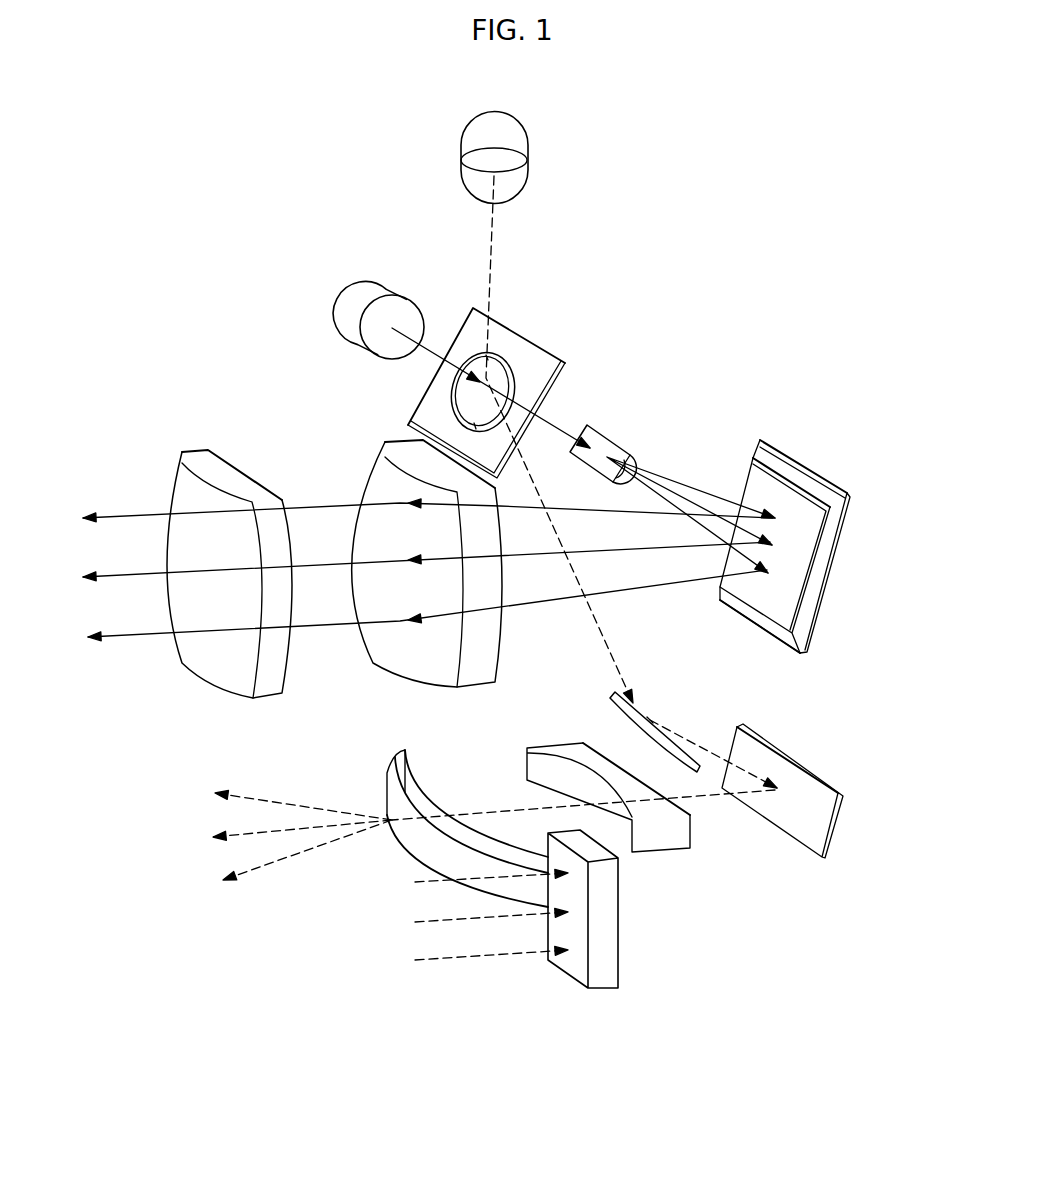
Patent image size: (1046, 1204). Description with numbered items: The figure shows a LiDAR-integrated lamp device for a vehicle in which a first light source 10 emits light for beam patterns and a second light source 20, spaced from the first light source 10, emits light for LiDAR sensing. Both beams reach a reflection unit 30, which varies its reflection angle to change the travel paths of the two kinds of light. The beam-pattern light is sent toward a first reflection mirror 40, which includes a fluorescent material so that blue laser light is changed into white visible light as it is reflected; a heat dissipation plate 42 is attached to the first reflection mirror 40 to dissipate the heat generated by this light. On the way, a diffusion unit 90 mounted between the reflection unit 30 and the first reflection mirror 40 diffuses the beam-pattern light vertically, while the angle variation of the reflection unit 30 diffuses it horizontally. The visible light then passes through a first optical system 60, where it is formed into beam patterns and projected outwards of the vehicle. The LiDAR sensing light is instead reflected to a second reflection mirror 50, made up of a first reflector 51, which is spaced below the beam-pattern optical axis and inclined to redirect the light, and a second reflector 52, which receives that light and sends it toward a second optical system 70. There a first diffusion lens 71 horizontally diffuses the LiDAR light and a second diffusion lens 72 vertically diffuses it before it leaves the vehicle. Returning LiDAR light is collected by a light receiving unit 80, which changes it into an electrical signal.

The first light source 10 is at (355, 298).
The second light source 20 is at (522, 146).
The reflection unit 30 is at (538, 348).
The first reflection mirror 40 is at (775, 487).
The heat dissipation plate 42 is at (817, 480).
The second reflection mirror 50 is at (763, 754).
The first reflector 51 is at (672, 738).
The second reflector 52 is at (790, 772).
The first optical system 60 is at (373, 485).
The second optical system 70 is at (586, 868).
The first diffusion lens 71 is at (672, 837).
The second diffusion lens 72 is at (497, 852).
The light receiving unit 80 is at (568, 958).
The diffusion unit 90 is at (612, 445).